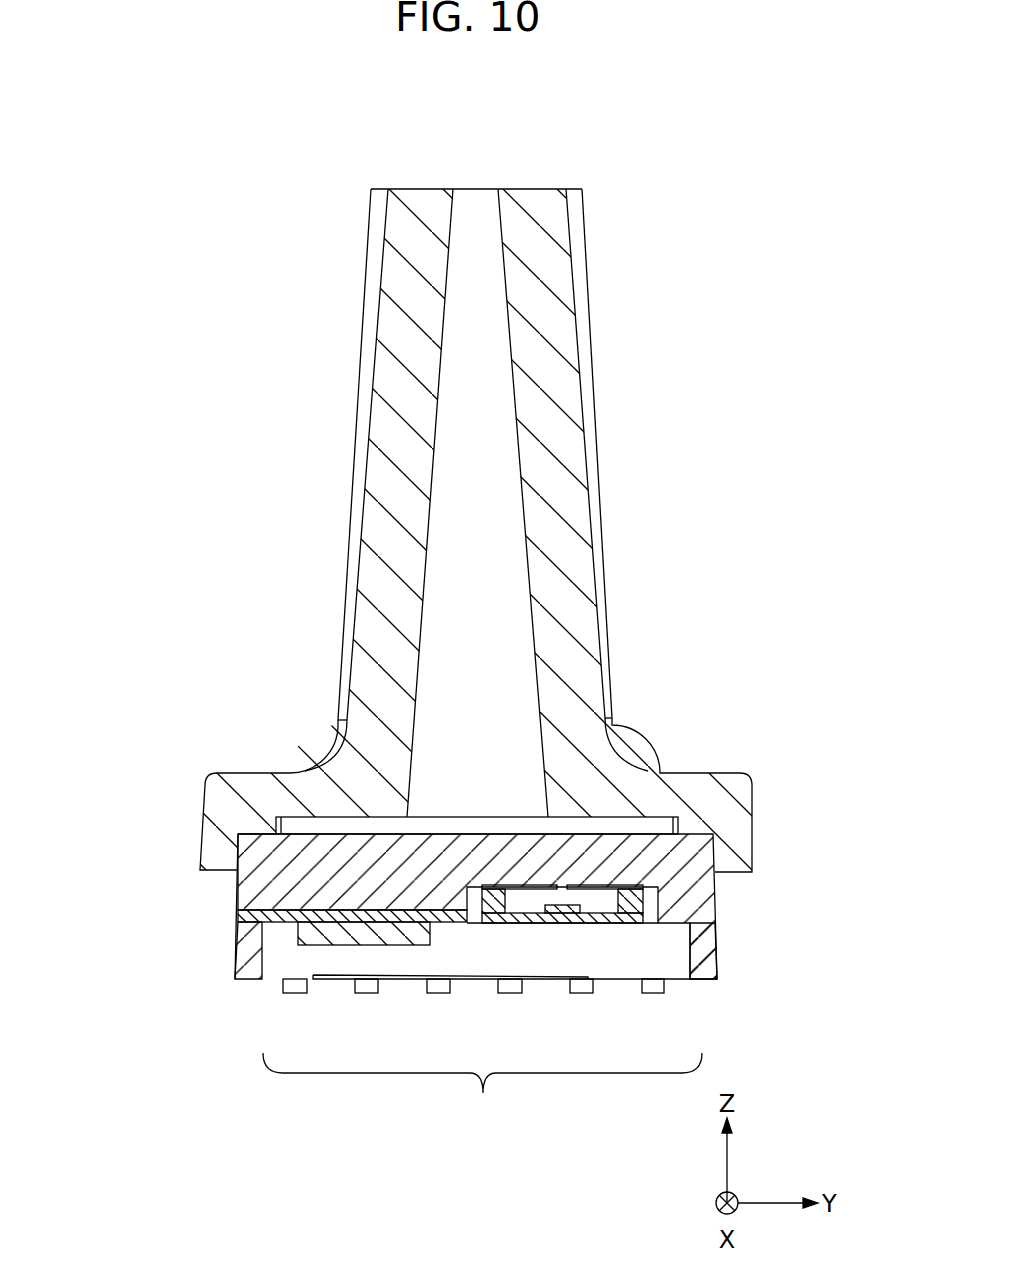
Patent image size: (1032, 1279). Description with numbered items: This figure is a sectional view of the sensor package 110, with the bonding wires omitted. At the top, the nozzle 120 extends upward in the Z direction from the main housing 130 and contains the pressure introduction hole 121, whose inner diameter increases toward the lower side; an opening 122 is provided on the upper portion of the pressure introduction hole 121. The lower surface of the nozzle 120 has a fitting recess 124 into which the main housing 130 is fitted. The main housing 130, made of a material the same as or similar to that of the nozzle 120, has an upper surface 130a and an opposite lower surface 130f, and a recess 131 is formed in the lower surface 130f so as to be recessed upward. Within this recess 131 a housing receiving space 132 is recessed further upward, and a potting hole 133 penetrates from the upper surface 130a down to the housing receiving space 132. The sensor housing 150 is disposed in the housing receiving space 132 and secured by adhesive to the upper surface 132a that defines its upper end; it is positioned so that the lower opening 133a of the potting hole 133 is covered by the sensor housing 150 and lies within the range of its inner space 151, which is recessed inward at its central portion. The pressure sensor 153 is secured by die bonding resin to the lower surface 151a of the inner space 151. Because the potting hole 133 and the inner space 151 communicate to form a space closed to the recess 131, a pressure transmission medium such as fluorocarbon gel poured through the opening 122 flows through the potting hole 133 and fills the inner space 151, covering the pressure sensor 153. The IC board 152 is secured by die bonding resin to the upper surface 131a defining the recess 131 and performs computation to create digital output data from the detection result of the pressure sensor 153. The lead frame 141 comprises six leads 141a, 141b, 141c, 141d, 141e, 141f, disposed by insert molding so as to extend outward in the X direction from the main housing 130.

The sensor package 110 is at (501, 1214).
The nozzle 120 is at (362, 360).
The pressure introduction hole 121 is at (506, 320).
The opening 122 is at (456, 191).
The fitting recess 124 is at (700, 840).
The main housing 130 is at (238, 913).
The upper surface 130a is at (260, 833).
The lower surface 130f is at (703, 985).
The recess 131 is at (276, 968).
The upper surface 131a is at (292, 932).
The housing receiving space 132 is at (660, 896).
The upper surface 132a is at (480, 893).
The potting hole 133 is at (618, 848).
The lower opening 133a is at (506, 886).
The lead frame 141 is at (482, 1092).
The lead 141a is at (294, 994).
The lead 141b is at (366, 994).
The lead 141c is at (438, 994).
The lead 141d is at (510, 994).
The lead 141e is at (581, 994).
The lead 141f is at (652, 994).
The sensor housing 150 is at (618, 923).
The inner space 151 is at (534, 886).
The lower surface 151a is at (541, 886).
The IC board 152 is at (292, 940).
The pressure sensor 153 is at (612, 886).